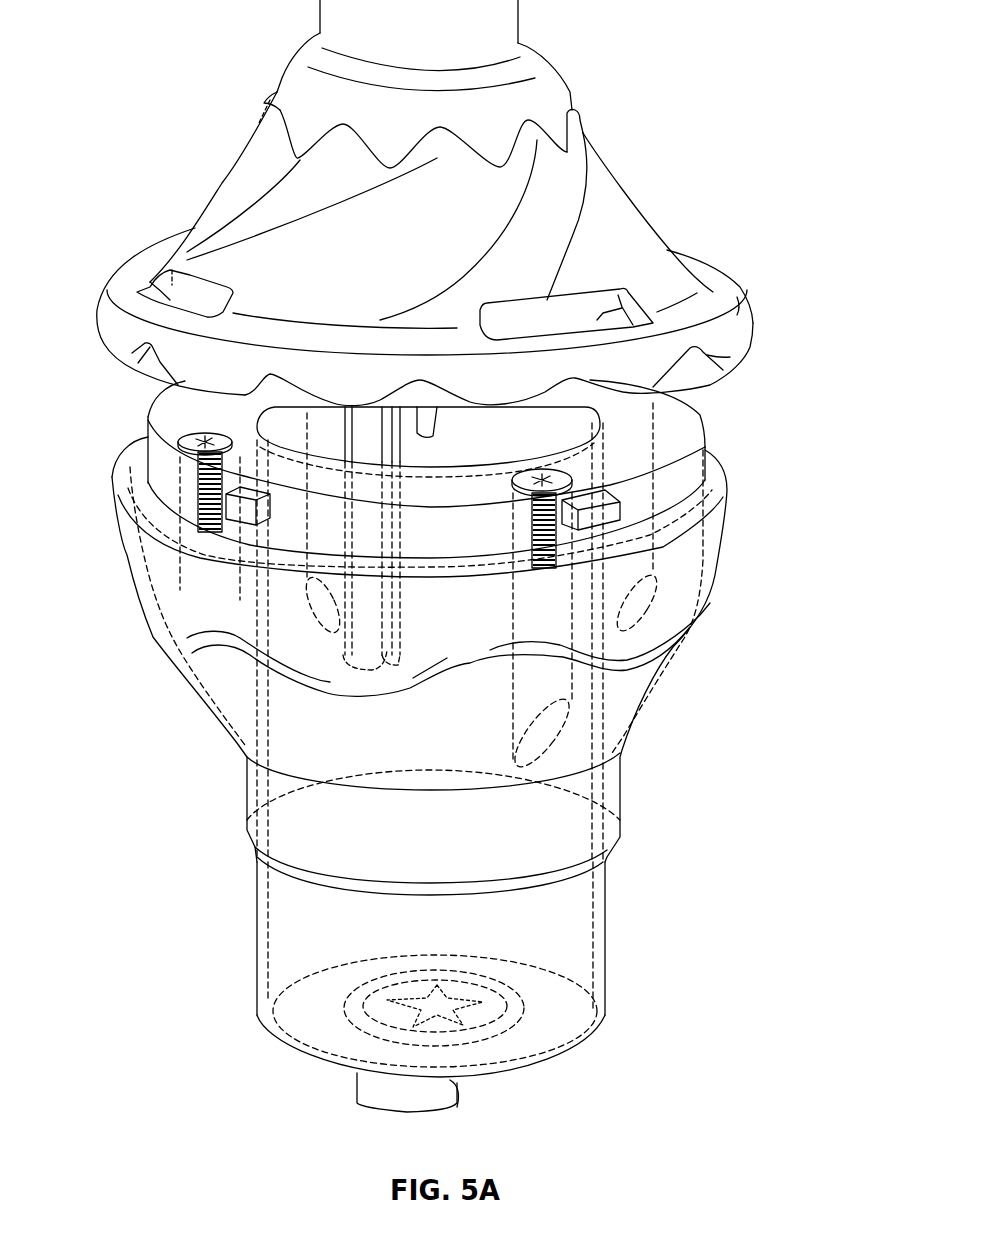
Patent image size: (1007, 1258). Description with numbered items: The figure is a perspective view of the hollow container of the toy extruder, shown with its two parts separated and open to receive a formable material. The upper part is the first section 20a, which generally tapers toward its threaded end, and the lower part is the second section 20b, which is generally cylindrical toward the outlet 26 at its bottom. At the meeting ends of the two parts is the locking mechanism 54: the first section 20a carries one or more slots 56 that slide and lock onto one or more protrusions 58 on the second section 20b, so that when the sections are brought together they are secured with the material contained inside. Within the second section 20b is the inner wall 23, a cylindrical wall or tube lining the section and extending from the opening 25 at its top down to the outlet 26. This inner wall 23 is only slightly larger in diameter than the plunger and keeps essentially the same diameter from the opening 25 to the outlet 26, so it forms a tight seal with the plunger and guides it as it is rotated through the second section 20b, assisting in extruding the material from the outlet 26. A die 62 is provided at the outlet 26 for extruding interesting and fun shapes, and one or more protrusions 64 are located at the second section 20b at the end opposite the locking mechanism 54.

The first section 20a is at (257, 197).
The second section 20b is at (250, 733).
The inner wall 23 is at (600, 927).
The opening 25 is at (465, 450).
The outlet 26 is at (447, 992).
The locking mechanism 54 is at (128, 396).
The slots 56 is at (145, 282).
The protrusions 58 is at (605, 520).
The die 62 is at (610, 1013).
The protrusions 64 is at (413, 1097).